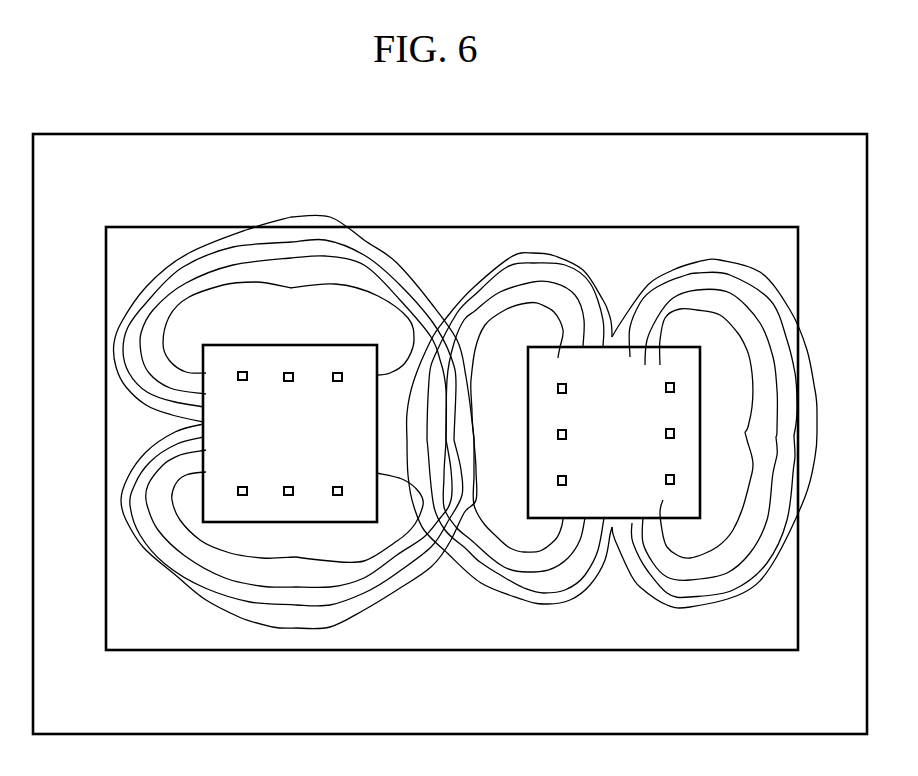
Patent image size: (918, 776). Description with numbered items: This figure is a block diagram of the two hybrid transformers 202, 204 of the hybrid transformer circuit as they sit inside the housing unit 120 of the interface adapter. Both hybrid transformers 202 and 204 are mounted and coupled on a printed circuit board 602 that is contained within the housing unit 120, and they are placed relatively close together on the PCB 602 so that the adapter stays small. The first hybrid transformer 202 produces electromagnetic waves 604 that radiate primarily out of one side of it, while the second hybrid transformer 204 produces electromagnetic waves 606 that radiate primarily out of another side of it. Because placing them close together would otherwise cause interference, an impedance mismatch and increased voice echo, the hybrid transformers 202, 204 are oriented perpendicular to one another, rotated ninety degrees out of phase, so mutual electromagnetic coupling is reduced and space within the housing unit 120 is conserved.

The housing unit 120 is at (726, 134).
The printed circuit board 602 is at (106, 376).
The hybrid transformer 202 is at (295, 345).
The hybrid transformer 204 is at (527, 437).
The electromagnetic waves 604 is at (412, 256).
The electromagnetic waves 606 is at (586, 257).